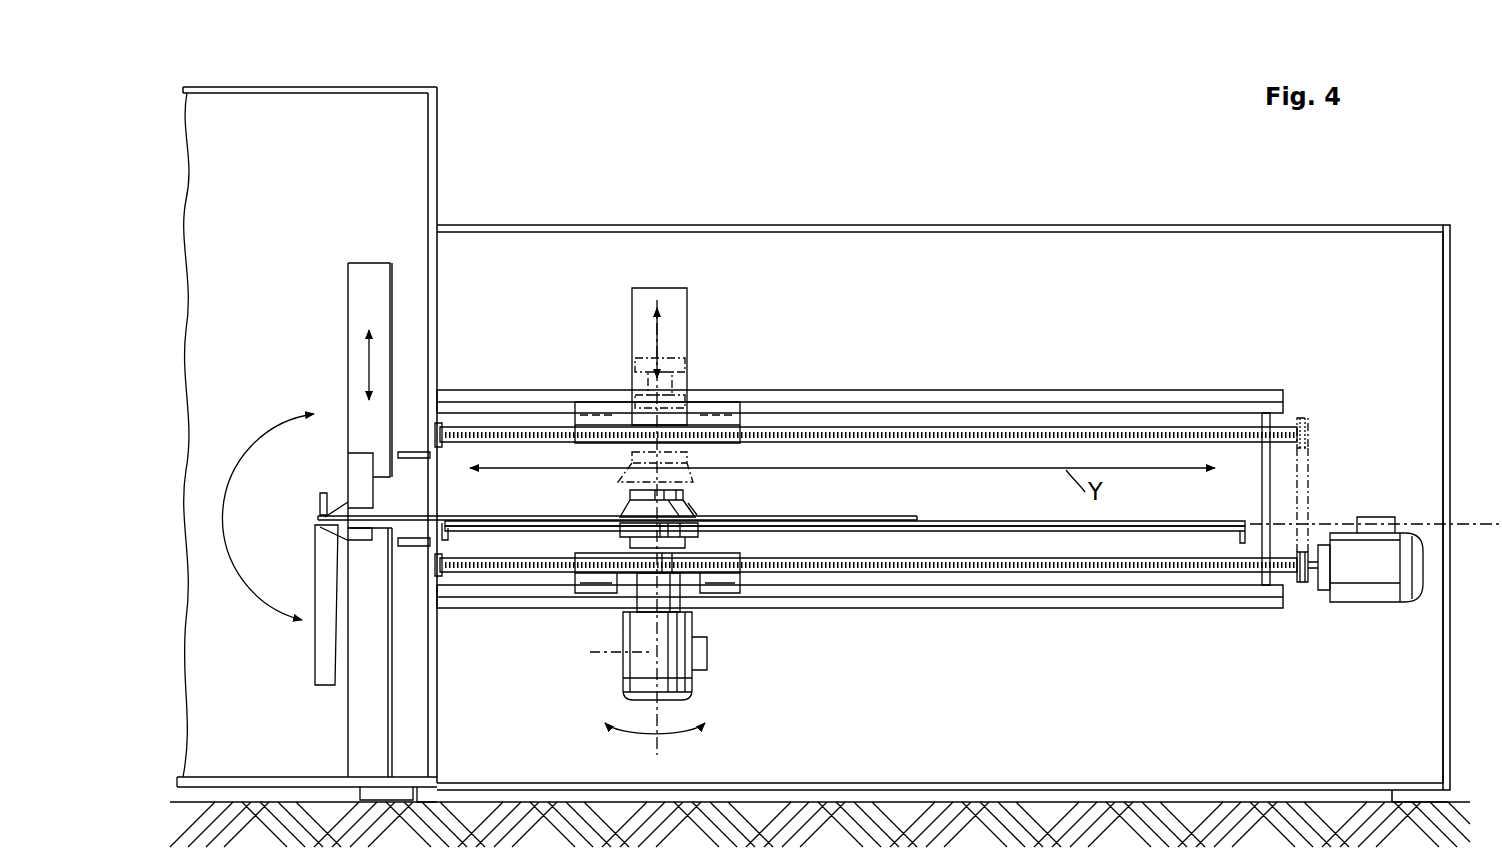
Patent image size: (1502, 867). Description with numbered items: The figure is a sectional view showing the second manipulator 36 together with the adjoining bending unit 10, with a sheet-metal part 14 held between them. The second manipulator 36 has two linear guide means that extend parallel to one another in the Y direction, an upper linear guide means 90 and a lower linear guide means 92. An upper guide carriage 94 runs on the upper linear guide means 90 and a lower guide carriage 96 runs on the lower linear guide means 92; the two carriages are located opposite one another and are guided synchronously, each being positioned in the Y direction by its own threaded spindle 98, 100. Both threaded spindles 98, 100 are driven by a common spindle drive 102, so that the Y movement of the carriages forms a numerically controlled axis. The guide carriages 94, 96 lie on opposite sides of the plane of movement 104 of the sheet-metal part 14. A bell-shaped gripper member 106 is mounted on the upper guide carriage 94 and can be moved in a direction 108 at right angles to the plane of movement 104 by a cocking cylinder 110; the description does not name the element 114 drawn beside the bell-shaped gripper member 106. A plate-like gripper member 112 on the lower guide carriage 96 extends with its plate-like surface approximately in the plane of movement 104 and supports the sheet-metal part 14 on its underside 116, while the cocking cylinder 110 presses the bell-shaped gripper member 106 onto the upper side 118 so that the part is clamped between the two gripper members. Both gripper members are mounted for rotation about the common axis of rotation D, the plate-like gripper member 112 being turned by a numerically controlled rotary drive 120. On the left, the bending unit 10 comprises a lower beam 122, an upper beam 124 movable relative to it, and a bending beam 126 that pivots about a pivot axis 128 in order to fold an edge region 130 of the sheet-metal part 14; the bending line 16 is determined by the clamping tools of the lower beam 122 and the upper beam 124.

The bending unit 10 is at (278, 112).
The second manipulator 36 is at (842, 268).
The sheet-metal part 14 is at (822, 515).
The bending line 16 is at (328, 512).
The upper linear guide means 90 is at (1100, 405).
The lower linear guide means 92 is at (1100, 600).
The upper guide carriage 94 is at (722, 404).
The lower guide carriage 96 is at (735, 585).
The threaded spindle 98 is at (1196, 428).
The threaded spindle 100 is at (1187, 575).
The spindle drive 102 is at (1365, 605).
The plane of movement 104 is at (1480, 522).
The bell-shaped gripper member 106 is at (630, 508).
The direction 108 is at (654, 340).
The cocking cylinder 110 is at (678, 305).
The plate-like gripper member 112 is at (616, 538).
The tool cutting edge 114 is at (700, 510).
The underside 116 is at (886, 531).
The upper side 118 is at (917, 521).
The rotary drive 120 is at (694, 690).
The lower beam 122 is at (362, 734).
The upper beam 124 is at (358, 312).
The bending beam 126 is at (320, 648).
The pivot axis 128 is at (316, 520).
The edge region 130 is at (318, 504).